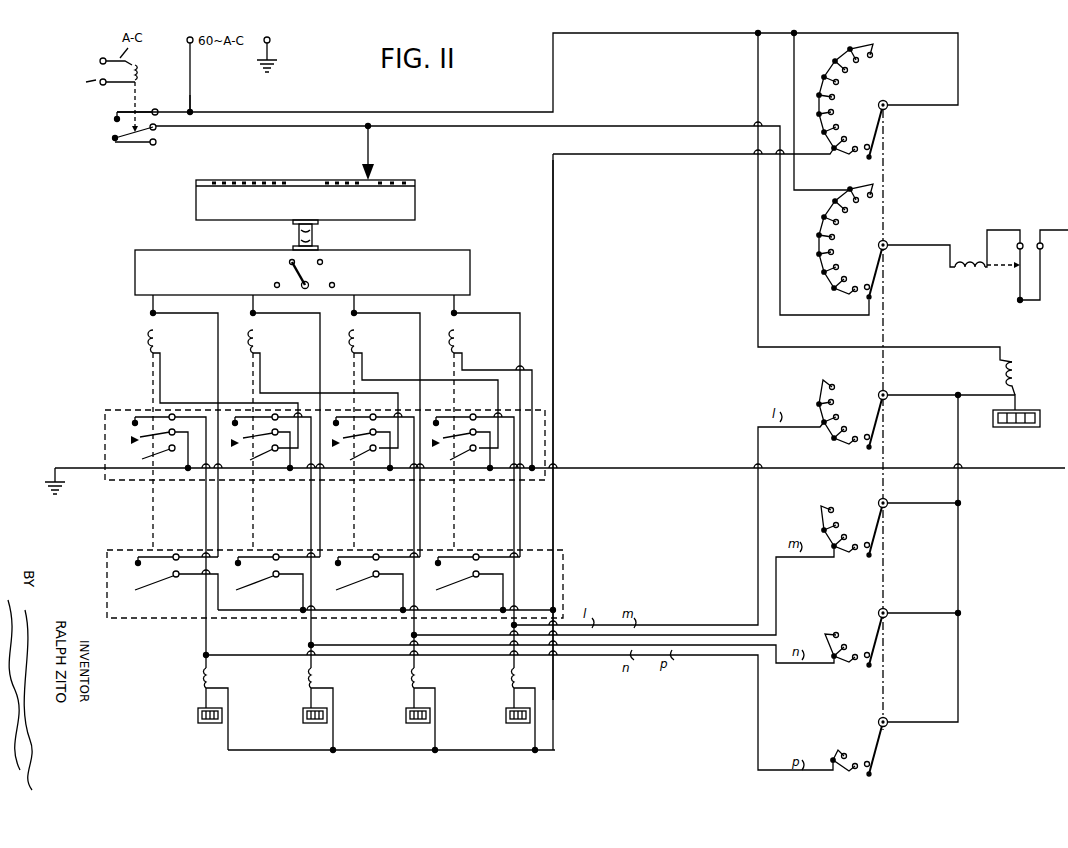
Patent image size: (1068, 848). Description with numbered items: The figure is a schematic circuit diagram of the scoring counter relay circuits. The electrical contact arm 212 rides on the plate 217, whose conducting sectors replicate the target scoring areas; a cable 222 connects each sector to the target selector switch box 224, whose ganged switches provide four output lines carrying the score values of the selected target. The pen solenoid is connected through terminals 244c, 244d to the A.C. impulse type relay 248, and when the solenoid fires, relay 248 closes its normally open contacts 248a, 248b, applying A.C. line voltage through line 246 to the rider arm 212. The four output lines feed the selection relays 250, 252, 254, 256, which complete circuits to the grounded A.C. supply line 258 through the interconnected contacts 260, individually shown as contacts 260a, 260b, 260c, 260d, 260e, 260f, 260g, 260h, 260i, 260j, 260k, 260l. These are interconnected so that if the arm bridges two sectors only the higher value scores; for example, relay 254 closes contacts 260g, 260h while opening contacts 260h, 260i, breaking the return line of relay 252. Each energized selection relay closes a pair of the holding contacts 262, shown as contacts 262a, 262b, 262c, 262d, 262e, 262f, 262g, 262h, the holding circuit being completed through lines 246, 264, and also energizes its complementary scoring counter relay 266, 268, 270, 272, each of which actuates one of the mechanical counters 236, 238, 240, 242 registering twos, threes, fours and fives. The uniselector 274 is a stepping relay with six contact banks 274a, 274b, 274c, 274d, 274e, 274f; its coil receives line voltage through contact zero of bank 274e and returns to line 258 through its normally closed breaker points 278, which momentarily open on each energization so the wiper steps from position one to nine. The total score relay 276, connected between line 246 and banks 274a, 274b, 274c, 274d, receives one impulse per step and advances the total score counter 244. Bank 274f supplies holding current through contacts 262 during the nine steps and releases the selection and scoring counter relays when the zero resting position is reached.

The electrical contact arm 212 is at (370, 164).
The plate 217 is at (227, 181).
The cable 222 is at (318, 240).
The target selector switch box 224 is at (440, 256).
The mechanical counter 236 is at (206, 725).
The mechanical counter 238 is at (312, 725).
The mechanical counter 240 is at (414, 725).
The mechanical counter 242 is at (514, 725).
The mechanical counter 244 is at (1028, 428).
The terminal 244c is at (101, 58).
The terminal 244d is at (98, 90).
The line 246 is at (191, 99).
The A.C. impulse type relay 248 is at (142, 72).
The normally open contact 248a is at (160, 100).
The normally open contact 248b is at (154, 138).
The selection relay 250 is at (147, 342).
The selection relay 252 is at (259, 342).
The selection relay 254 is at (360, 342).
The selection relay 256 is at (460, 342).
The grounded A.C. supply line 258 is at (76, 467).
The contacts 260 is at (150, 408).
The contact 260a is at (173, 414).
The contact 260b is at (147, 442).
The contact 260c is at (140, 455).
The contact 260d is at (276, 414).
The contact 260e is at (255, 442).
The contact 260f is at (249, 455).
The contact 260g is at (375, 414).
The contact 260h is at (355, 442).
The contact 260i is at (348, 455).
The contact 260j is at (478, 404).
The contact 260k is at (455, 442).
The contact 260l is at (448, 455).
The holding contacts 262 is at (114, 620).
The holding contact 262a is at (180, 547).
The holding contact 262b is at (176, 578).
The holding contact 262c is at (280, 547).
The holding contact 262d is at (276, 578).
The holding contact 262e is at (380, 547).
The holding contact 262f is at (376, 578).
The holding contact 262g is at (480, 547).
The holding contact 262h is at (476, 578).
The line 264 is at (555, 286).
The scoring counter relay 266 is at (212, 680).
The scoring counter relay 268 is at (317, 680).
The scoring counter relay 270 is at (420, 680).
The scoring counter relay 272 is at (508, 682).
The uniselector 274 is at (968, 272).
The contact bank 274a is at (886, 719).
The contact bank 274b is at (886, 610).
The contact bank 274c is at (886, 500).
The contact bank 274d is at (886, 391).
The contact bank 274e is at (886, 240).
The contact bank 274f is at (886, 100).
The total score relay 276 is at (1022, 386).
The breaker points 278 is at (1030, 240).